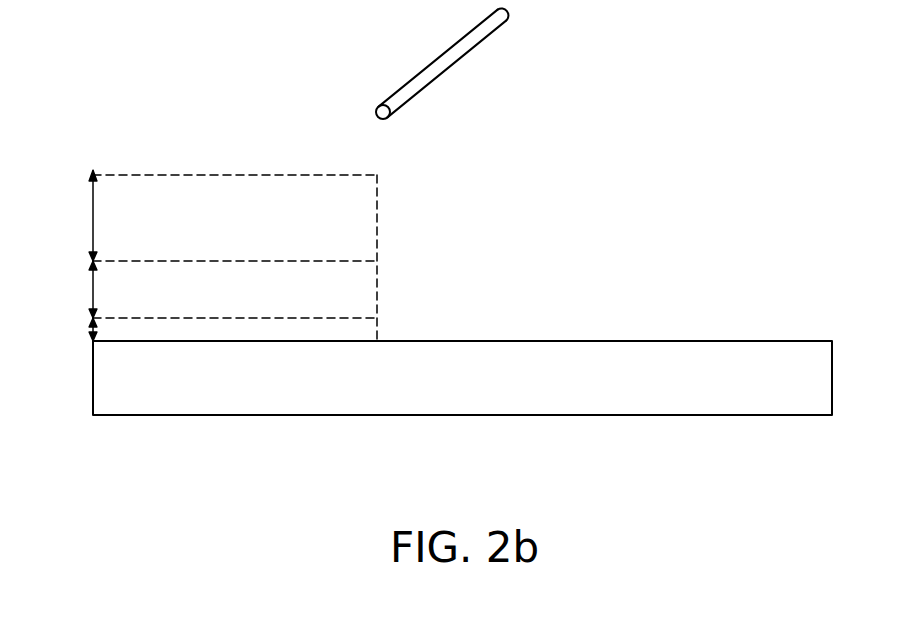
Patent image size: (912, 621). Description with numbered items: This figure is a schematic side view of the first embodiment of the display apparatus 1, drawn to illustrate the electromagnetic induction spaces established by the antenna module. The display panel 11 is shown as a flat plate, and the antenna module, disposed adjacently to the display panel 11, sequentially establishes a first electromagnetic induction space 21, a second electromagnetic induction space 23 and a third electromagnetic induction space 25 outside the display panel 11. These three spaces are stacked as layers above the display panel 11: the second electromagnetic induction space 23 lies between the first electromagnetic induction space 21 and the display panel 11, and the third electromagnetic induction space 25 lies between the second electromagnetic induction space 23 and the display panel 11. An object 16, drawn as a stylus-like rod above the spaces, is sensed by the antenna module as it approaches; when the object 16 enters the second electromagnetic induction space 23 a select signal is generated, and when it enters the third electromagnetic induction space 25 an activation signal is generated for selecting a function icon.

The display apparatus 1 is at (660, 392).
The display panel 11 is at (323, 341).
The object 16 is at (457, 49).
The first electromagnetic induction space 21 is at (84, 208).
The second electromagnetic induction space 23 is at (84, 286).
The third electromagnetic induction space 25 is at (82, 327).